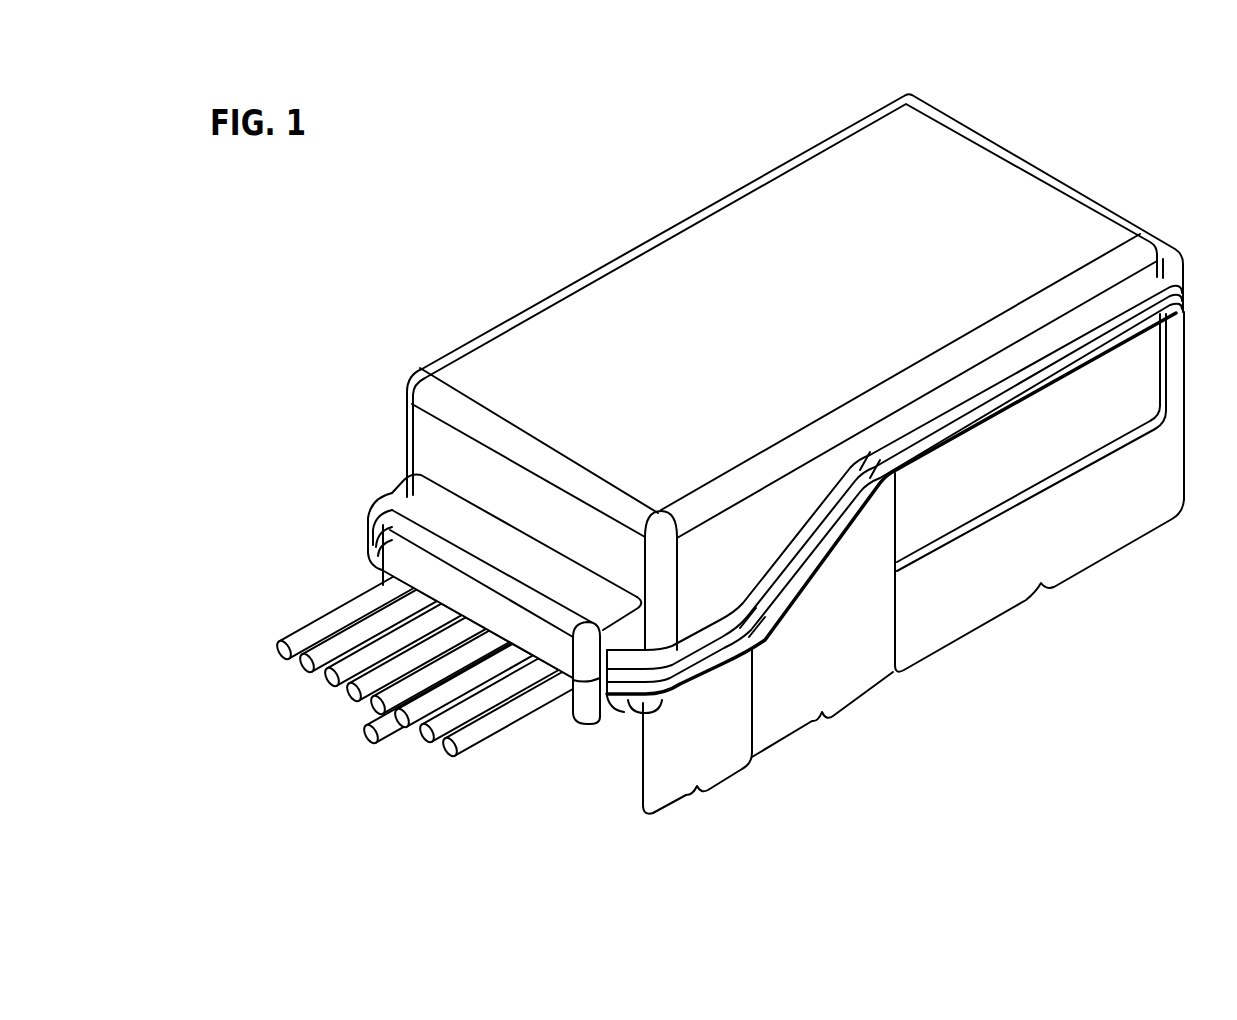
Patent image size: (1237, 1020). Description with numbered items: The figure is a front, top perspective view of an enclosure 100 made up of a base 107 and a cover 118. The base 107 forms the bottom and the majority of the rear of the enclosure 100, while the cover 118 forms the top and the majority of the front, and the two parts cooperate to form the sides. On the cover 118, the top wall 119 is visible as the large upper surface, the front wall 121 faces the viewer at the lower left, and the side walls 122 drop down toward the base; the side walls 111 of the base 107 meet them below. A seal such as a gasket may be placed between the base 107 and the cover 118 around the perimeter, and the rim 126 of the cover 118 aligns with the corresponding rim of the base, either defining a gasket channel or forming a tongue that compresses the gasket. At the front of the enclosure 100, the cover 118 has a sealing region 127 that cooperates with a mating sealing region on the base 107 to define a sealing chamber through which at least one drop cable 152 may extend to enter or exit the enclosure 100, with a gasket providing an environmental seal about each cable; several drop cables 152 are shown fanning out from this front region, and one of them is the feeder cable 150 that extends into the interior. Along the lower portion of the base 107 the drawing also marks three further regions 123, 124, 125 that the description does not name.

The enclosure 100 is at (580, 268).
The base 107 is at (923, 523).
The side walls 111 is at (1043, 447).
The cover 118 is at (665, 232).
The top wall 119 is at (802, 322).
The front wall 121 is at (546, 512).
The side walls 122 is at (717, 547).
The first section of base 123 is at (697, 788).
The third section of base 124 is at (1041, 587).
The second section of base 125 is at (822, 714).
The rim 126 is at (1173, 260).
The sealing region 127 is at (433, 516).
The feeder cable 150 is at (391, 743).
The drop cable 152 is at (374, 711).